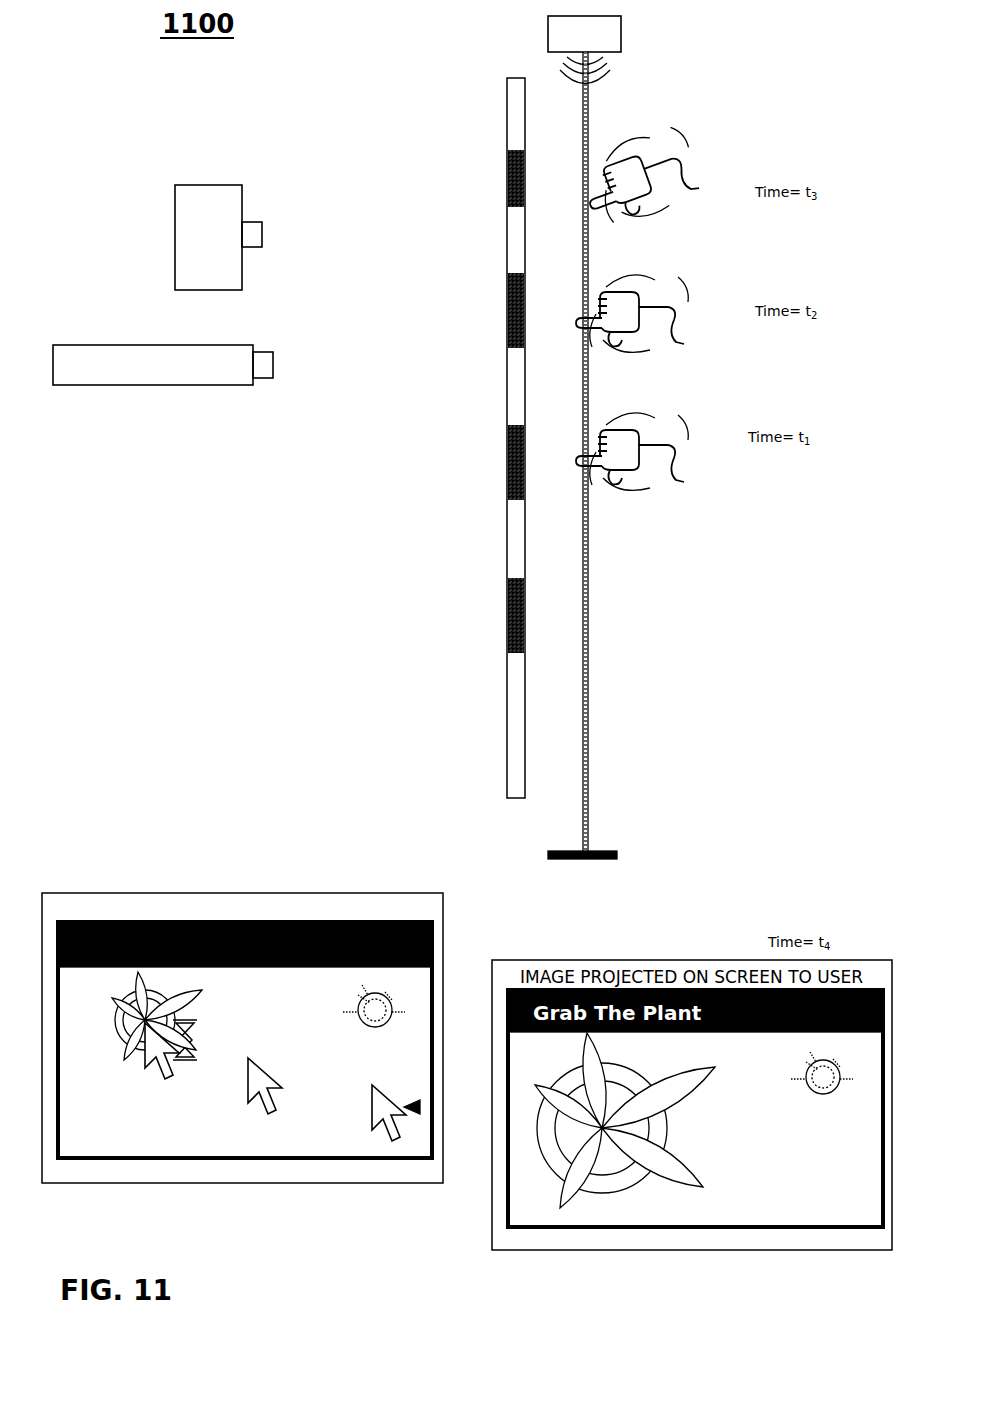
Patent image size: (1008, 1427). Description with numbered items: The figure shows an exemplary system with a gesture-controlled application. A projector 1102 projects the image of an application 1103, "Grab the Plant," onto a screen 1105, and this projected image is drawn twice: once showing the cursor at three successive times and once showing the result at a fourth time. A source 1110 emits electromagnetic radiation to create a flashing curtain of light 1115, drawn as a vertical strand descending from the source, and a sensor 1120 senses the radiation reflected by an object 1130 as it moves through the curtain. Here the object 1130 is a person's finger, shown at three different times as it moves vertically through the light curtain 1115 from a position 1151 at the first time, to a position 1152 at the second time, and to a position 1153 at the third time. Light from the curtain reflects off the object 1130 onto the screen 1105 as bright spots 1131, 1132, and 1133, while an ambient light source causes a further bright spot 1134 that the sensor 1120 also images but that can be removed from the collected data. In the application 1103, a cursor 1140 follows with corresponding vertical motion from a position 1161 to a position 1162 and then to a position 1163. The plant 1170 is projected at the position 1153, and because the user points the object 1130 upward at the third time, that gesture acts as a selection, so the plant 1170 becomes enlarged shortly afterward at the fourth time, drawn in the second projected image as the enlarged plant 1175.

The projector 1102 is at (163, 365).
The application 1103 is at (430, 947).
The screen 1105 is at (513, 693).
The source 1110 is at (584, 50).
The flashing curtain of light 1115 is at (585, 683).
The sensor 1120 is at (218, 237).
The object 1130 is at (684, 482).
The bright spot 1131 is at (513, 457).
The bright spot 1132 is at (513, 305).
The bright spot 1133 is at (513, 180).
The bright spot 1134 is at (513, 605).
The cursor 1140 is at (420, 1107).
The position 1151 is at (590, 468).
The position 1152 is at (608, 333).
The position 1153 is at (613, 190).
The position 1161 is at (398, 1140).
The position 1162 is at (262, 1112).
The position 1163 is at (165, 1065).
The plant 1170 is at (150, 1018).
The grabbed plant 1175 is at (667, 1118).